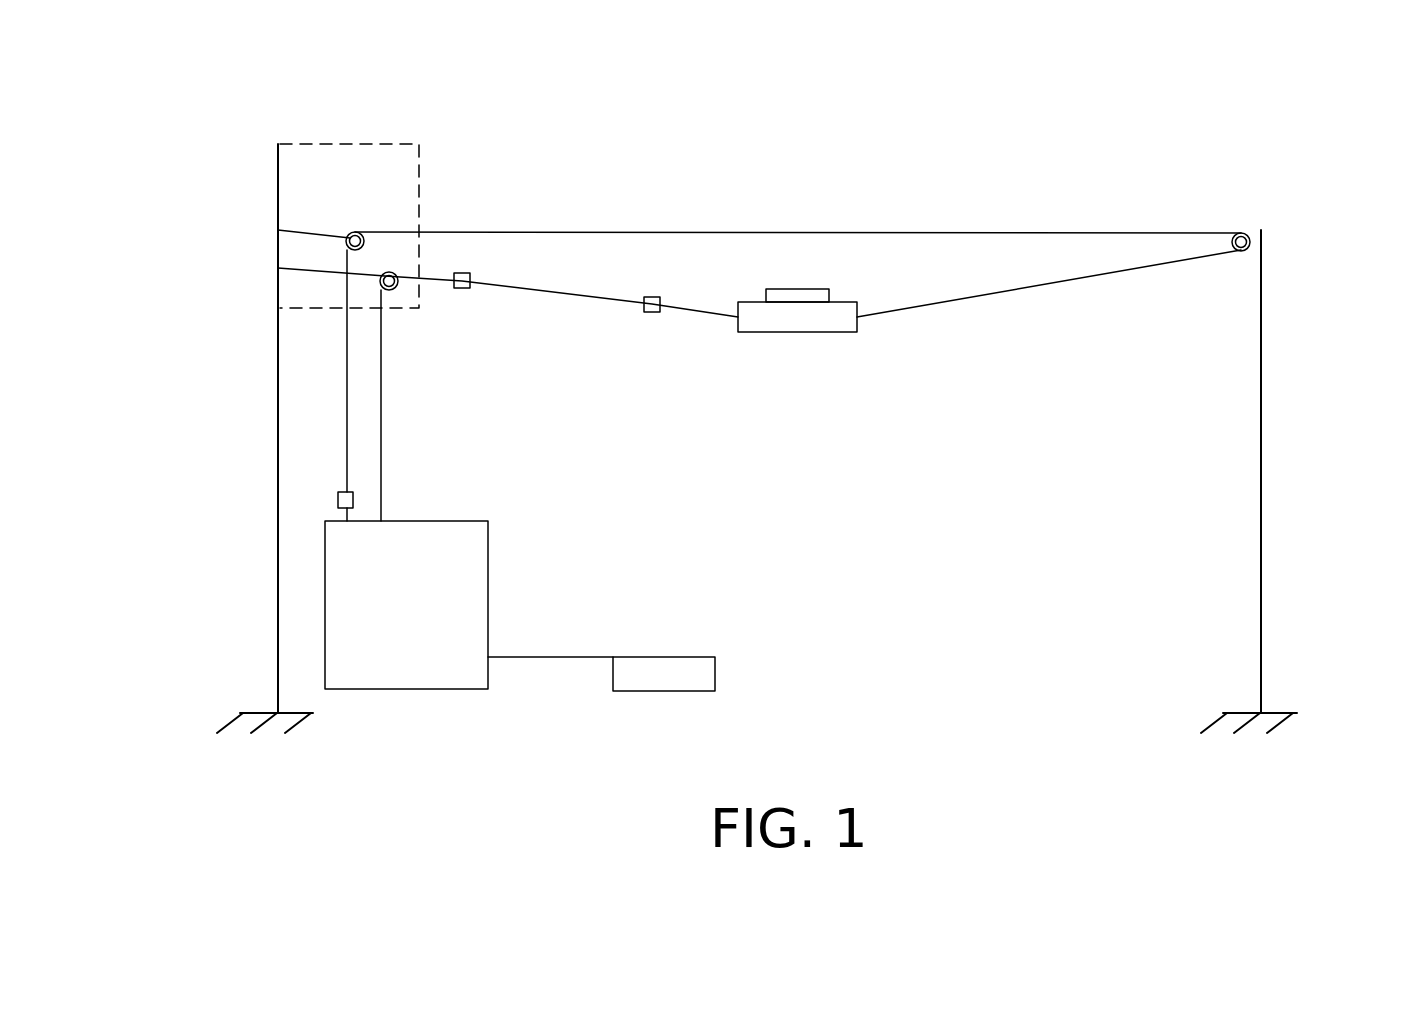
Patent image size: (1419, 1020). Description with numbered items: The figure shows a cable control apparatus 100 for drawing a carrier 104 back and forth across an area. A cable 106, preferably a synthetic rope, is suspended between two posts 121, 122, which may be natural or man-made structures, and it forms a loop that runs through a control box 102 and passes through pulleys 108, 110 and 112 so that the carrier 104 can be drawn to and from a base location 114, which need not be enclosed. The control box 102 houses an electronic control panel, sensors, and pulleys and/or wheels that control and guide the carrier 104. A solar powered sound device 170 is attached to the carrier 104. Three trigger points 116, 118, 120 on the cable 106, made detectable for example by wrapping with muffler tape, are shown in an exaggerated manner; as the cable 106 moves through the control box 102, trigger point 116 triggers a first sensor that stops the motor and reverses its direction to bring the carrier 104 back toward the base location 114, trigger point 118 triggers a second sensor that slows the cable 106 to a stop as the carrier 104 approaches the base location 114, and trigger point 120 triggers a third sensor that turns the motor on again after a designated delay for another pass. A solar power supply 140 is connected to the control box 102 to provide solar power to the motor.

The cable control apparatus 100 is at (786, 199).
The control box 102 is at (453, 610).
The carrier 104 is at (825, 334).
The cable 106 is at (1022, 232).
The pulley 108 is at (363, 240).
The pulley 110 is at (397, 277).
The pulley 112 is at (1234, 236).
The base location 114 is at (370, 160).
The trigger point 116 is at (338, 500).
The trigger point 118 is at (457, 290).
The trigger point 120 is at (648, 315).
The post 121 is at (277, 402).
The post 122 is at (1261, 457).
The solar power supply 140 is at (699, 674).
The solar powered sound device 170 is at (808, 297).